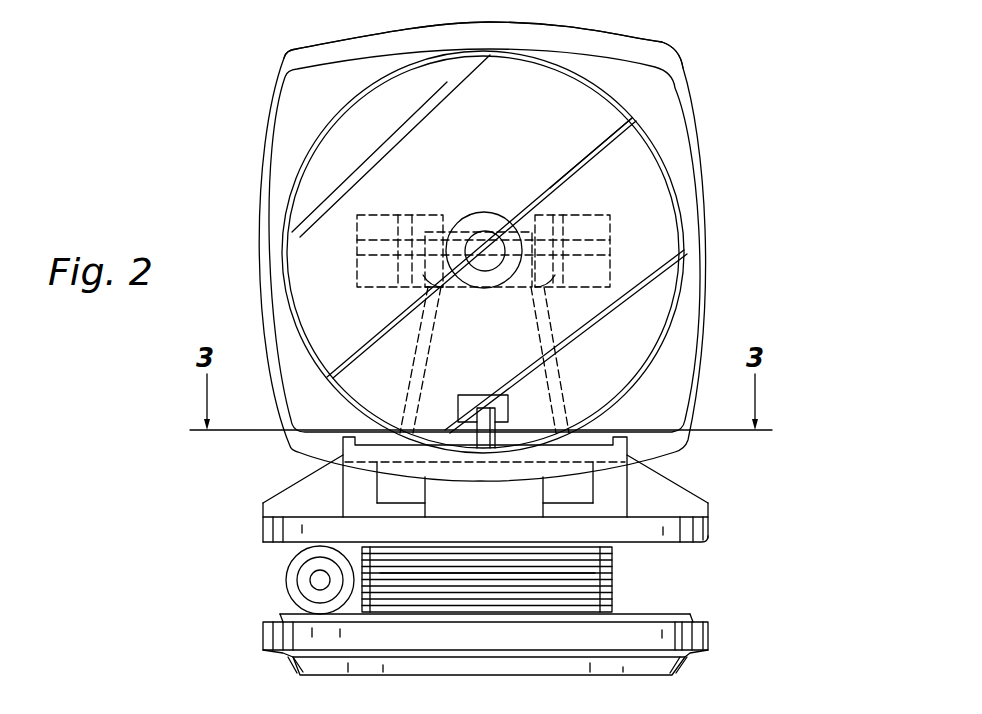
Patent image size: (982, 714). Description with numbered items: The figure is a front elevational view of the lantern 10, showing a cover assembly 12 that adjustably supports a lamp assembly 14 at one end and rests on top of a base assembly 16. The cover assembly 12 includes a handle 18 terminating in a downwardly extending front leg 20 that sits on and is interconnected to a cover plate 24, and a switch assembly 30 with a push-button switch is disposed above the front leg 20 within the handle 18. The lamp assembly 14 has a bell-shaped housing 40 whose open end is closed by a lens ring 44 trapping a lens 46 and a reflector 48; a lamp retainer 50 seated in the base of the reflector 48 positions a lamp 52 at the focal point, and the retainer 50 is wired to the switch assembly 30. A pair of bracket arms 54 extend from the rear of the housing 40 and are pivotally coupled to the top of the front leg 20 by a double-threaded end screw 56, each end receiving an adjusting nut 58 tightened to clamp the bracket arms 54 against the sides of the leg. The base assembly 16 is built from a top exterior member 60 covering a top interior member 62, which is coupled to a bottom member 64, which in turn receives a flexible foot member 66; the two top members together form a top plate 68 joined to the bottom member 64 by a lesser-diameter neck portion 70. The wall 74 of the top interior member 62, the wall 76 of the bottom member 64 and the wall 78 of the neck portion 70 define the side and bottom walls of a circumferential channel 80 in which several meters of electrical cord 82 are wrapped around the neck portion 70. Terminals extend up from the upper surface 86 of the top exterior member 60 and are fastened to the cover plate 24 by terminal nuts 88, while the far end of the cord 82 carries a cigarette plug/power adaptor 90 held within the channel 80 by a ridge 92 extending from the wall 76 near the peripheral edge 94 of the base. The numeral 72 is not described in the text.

The lantern 10 is at (730, 76).
The cover assembly 12 is at (623, 225).
The lamp assembly 14 is at (710, 272).
The base assembly 16 is at (745, 632).
The handle 18 is at (633, 120).
The front leg 20 is at (563, 358).
The cover plate 24 is at (610, 432).
The switch assembly 30 is at (466, 206).
The bell-shaped housing 40 is at (644, 43).
The lens ring 44 is at (651, 73).
The lens 46 is at (635, 151).
The reflector 48 is at (515, 112).
The lamp retainer 50 is at (486, 230).
The lamp 52 is at (478, 289).
The bracket arms 54 is at (410, 215).
The double-threaded end screw 56 is at (362, 286).
The adjusting nut 58 is at (373, 215).
The top exterior member 60 is at (556, 498).
The top interior member 62 is at (700, 550).
The bottom member 64 is at (557, 617).
The foot member 66 is at (583, 678).
The top plate 68 is at (716, 502).
The neck portion 70 is at (631, 596).
The lower flange 72 is at (721, 617).
The wall of top interior member 74 is at (268, 547).
The wall of bottom member 76 is at (267, 629).
The wall of neck portion 78 is at (596, 582).
The channel 80 is at (200, 590).
The electrical cord 82 is at (467, 592).
The upper surface 86 is at (345, 462).
The terminal nut 88 is at (479, 394).
The cigarette plug/power adaptor 90 is at (295, 603).
The ridge 92 is at (690, 612).
The peripheral edge 94 is at (284, 652).